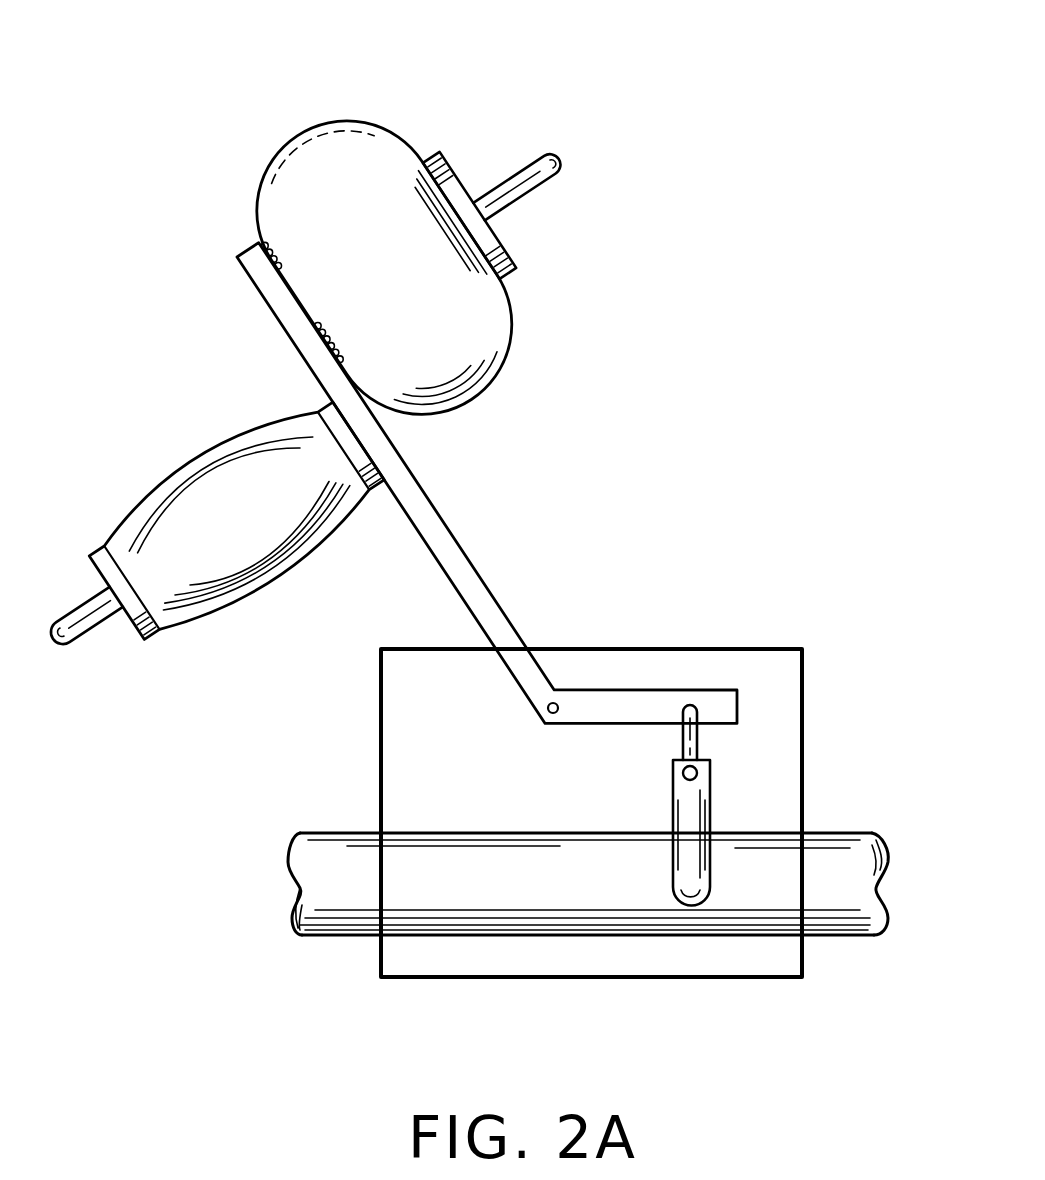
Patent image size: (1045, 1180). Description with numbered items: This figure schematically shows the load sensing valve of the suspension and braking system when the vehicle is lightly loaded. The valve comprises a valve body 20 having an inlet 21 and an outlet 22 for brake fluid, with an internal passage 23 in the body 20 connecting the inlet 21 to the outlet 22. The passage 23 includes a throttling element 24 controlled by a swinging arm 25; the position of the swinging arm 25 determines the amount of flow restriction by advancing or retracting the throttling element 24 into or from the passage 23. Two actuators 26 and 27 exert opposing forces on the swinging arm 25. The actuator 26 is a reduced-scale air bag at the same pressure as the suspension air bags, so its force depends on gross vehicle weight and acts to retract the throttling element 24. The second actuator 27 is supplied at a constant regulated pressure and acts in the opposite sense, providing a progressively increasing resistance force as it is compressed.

The valve body 20 is at (380, 745).
The inlet 21 is at (325, 882).
The outlet 22 is at (840, 885).
The internal passage 23 is at (600, 893).
The throttling element 24 is at (680, 790).
The swinging arm 25 is at (472, 587).
The actuator 26 is at (352, 120).
The second actuator 27 is at (179, 460).